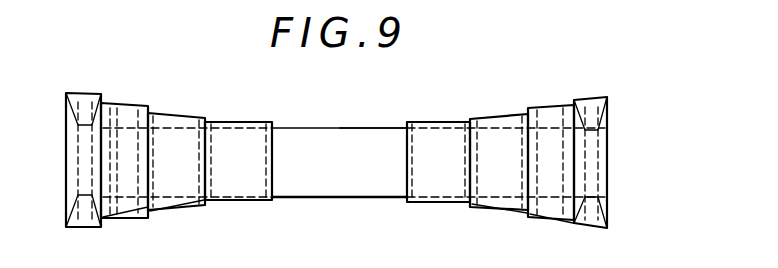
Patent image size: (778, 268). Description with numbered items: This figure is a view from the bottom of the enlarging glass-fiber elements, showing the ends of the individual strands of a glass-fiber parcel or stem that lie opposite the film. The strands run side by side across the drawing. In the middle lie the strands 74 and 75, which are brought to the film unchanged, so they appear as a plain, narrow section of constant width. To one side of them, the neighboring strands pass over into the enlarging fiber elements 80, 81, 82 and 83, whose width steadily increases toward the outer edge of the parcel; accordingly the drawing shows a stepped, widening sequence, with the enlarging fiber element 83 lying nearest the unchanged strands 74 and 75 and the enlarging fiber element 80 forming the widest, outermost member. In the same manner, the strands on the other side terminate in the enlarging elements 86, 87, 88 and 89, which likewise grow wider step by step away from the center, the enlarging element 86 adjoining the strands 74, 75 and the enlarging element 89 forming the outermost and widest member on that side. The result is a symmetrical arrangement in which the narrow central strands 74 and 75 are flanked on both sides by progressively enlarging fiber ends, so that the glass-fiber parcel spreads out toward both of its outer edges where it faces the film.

The strand 74 is at (327, 148).
The strand 75 is at (377, 140).
The enlarging fiber element 80 is at (85, 103).
The enlarging fiber element 81 is at (125, 110).
The enlarging fiber element 82 is at (175, 122).
The enlarging fiber element 83 is at (237, 128).
The enlarging element 86 is at (437, 137).
The enlarging element 87 is at (495, 135).
The enlarging element 88 is at (545, 128).
The enlarging element 89 is at (592, 108).